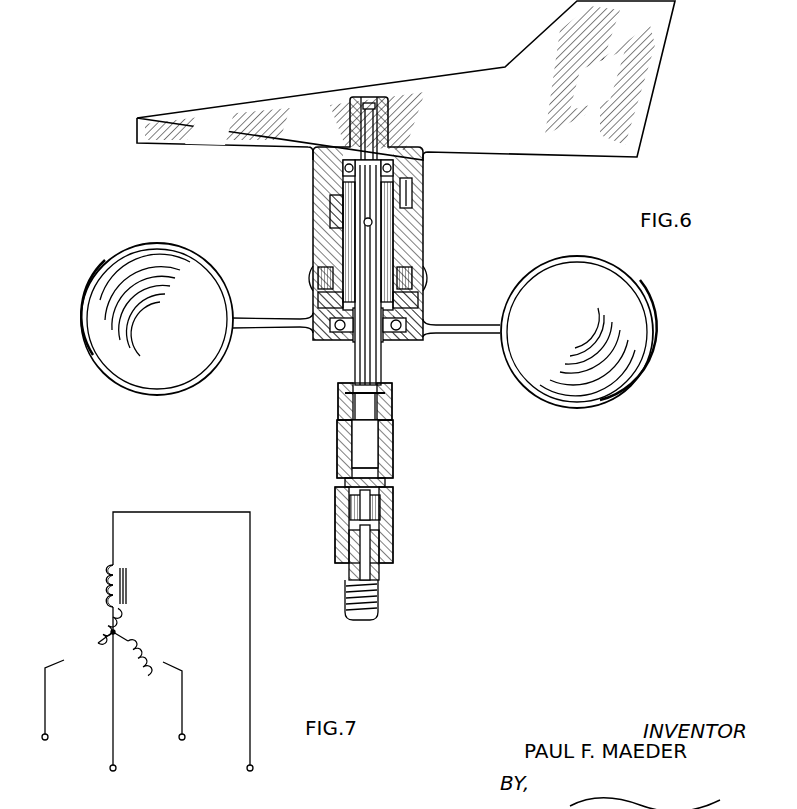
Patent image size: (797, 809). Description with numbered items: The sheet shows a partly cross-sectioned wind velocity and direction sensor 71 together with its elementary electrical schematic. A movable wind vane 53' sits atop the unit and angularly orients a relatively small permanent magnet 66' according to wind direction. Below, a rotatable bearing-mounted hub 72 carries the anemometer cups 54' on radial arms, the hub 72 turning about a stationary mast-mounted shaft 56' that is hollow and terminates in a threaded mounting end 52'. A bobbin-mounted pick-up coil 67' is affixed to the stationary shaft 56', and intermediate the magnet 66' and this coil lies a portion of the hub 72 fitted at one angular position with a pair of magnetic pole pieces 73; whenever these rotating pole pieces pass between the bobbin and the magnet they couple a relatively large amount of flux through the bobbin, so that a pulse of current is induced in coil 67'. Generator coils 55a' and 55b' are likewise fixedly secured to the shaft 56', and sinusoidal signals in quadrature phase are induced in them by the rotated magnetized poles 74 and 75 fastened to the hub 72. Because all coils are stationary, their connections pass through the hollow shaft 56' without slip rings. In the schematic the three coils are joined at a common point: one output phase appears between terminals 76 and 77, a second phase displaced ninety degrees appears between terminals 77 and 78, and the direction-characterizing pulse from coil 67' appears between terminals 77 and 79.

In FIG. 6, the wind velocity and direction sensor 71 is at (108, 119).
In FIG. 6, the wind vane 53' is at (421, 80).
In FIG. 6, the anemometer cups 54' is at (369, 325).
In FIG. 6, the stationary mast-mounted shaft 56' is at (398, 275).
In FIG. 6, the pick-up coil 67' is at (329, 241).
In FIG. 7, the pick-up coil 67' is at (98, 585).
In FIG. 6, the hub 72 is at (330, 212).
In FIG. 6, the magnetic pole pieces 73 is at (393, 190).
In FIG. 6, the permanent magnet 66' is at (439, 193).
In FIG. 6, the generator coil 55a' is at (443, 260).
In FIG. 7, the generator coil 55a' is at (92, 650).
In FIG. 6, the generator coil 55b' is at (304, 265).
In FIG. 7, the generator coil 55b' is at (174, 652).
In FIG. 6, the magnetized pole 75 is at (318, 297).
In FIG. 6, the magnetized pole 74 is at (422, 300).
In FIG. 6, the threaded mounting stud 52' is at (388, 572).
In FIG. 7, the terminal 76 is at (43, 740).
In FIG. 7, the terminal 77 is at (111, 771).
In FIG. 7, the terminal 78 is at (180, 740).
In FIG. 7, the terminal 79 is at (248, 771).